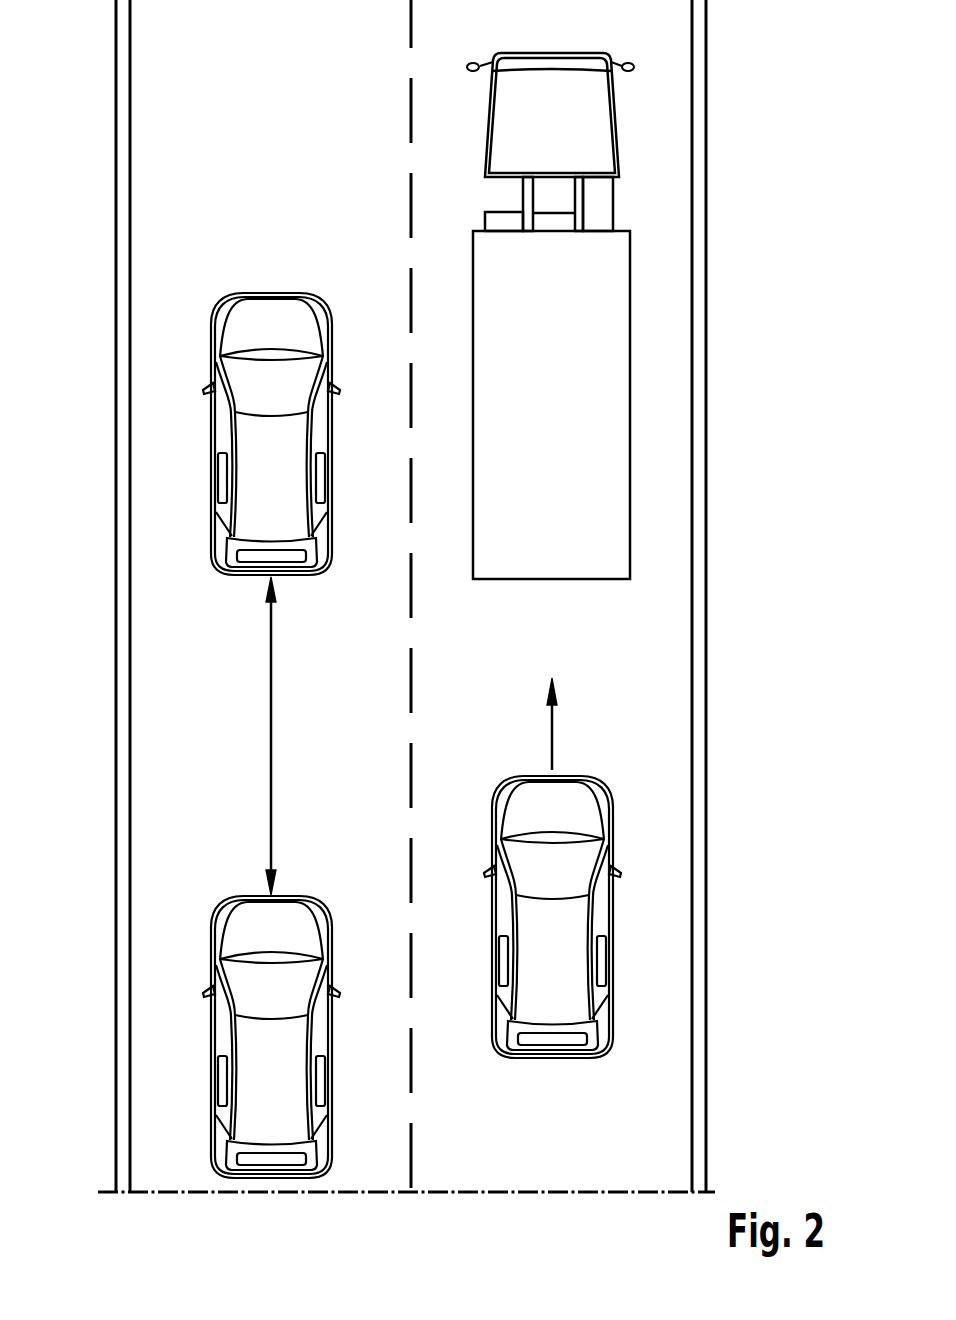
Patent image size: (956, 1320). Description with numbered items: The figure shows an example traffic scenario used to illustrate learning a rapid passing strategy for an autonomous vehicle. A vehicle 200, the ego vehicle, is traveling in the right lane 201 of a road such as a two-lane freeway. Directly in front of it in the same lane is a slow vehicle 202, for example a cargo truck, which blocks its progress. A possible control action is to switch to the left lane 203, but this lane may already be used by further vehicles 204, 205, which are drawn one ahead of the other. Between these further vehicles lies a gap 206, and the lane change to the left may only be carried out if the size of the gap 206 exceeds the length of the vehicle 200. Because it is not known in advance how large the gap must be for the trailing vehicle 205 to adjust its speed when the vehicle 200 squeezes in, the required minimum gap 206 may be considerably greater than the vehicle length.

The vehicle 200 is at (613, 927).
The right lane 201 is at (665, 26).
The slow vehicle 202 is at (630, 278).
The left lane 203 is at (156, 24).
The further vehicle 204 is at (213, 447).
The further vehicle 205 is at (213, 1048).
The gap 206 is at (270, 736).